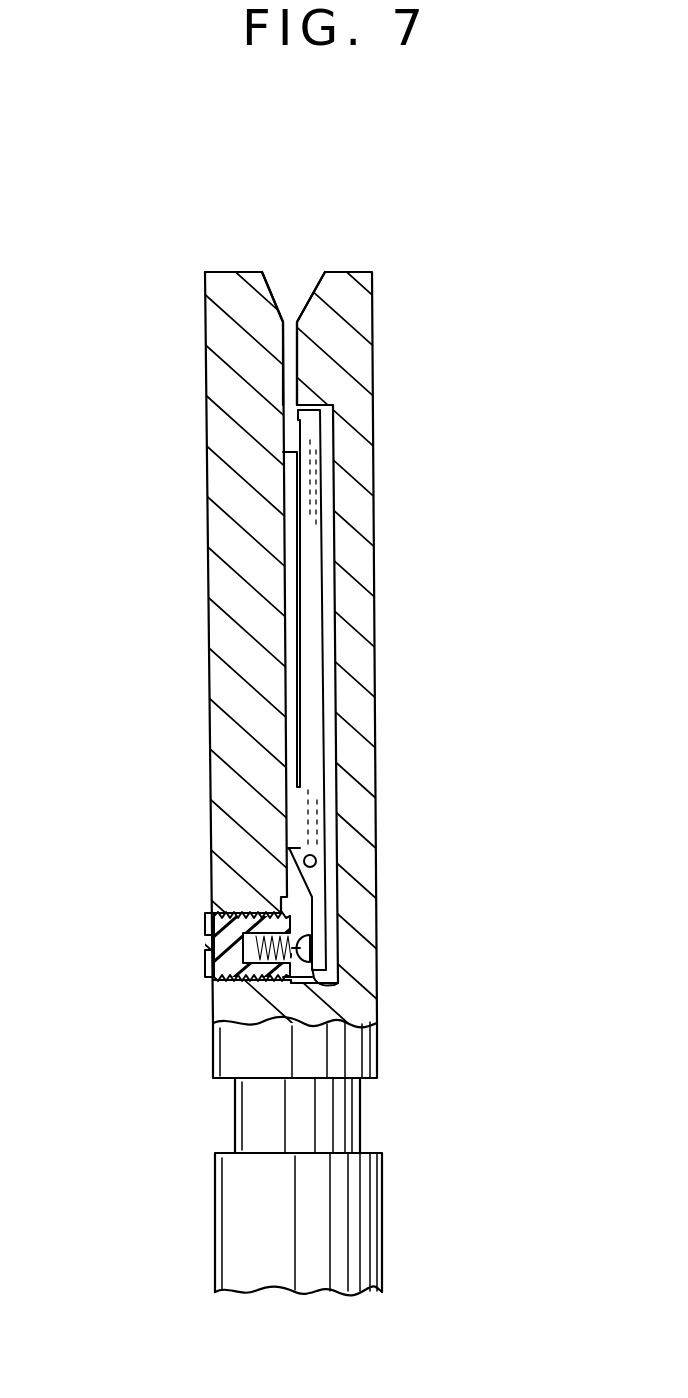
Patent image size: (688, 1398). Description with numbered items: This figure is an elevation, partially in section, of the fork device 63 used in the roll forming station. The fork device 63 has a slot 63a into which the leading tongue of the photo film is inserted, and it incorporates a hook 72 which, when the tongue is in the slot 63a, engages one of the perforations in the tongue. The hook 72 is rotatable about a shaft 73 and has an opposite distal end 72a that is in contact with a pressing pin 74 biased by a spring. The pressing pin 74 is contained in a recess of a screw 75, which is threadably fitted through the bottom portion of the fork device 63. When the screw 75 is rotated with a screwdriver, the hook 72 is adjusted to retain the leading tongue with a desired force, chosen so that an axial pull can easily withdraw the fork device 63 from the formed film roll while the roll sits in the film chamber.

The fork device 63 is at (377, 800).
The slot 63a is at (290, 320).
The hook 72 is at (300, 432).
The distal end 72a is at (326, 945).
The shaft 73 is at (317, 862).
The pressing pin 74 is at (336, 984).
The screw 75 is at (205, 931).